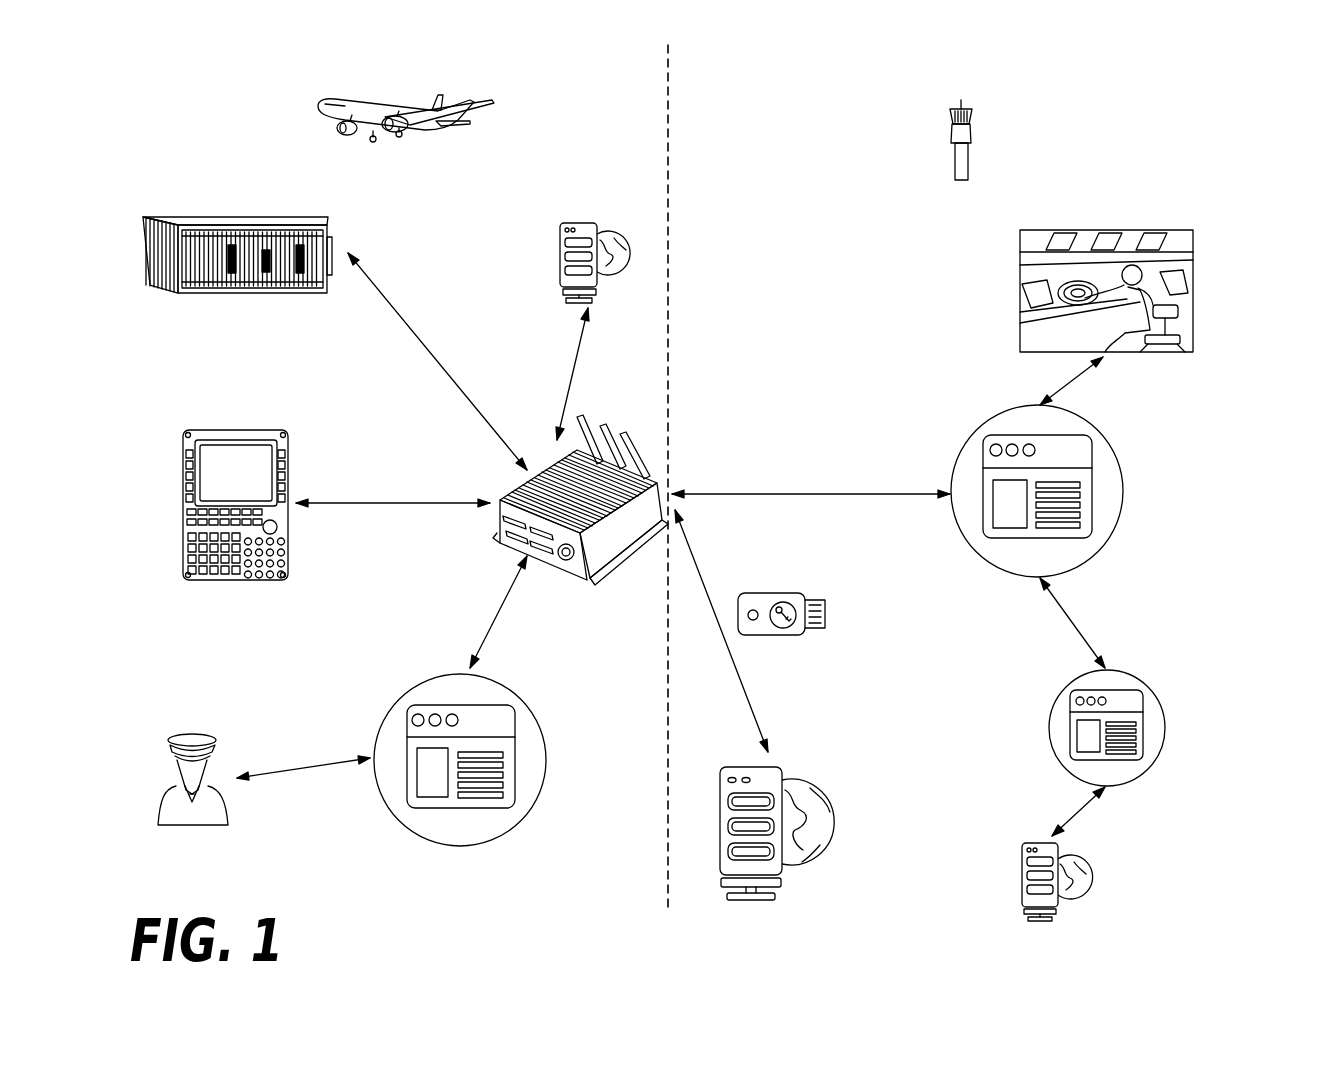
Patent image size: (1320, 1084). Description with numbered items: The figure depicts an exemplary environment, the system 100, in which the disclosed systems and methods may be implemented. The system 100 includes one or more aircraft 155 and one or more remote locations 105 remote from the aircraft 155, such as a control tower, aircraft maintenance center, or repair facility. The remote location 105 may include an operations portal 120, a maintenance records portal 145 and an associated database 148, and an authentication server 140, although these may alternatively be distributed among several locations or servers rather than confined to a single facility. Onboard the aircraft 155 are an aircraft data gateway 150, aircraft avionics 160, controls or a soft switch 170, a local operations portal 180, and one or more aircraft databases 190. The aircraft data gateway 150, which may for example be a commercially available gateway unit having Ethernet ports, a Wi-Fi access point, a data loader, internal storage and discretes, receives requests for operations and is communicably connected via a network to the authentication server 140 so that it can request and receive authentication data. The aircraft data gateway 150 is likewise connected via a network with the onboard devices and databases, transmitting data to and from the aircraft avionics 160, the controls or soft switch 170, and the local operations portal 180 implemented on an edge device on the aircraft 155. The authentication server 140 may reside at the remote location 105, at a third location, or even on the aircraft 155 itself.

The system 100 is at (1220, 175).
The remote location 105 is at (972, 128).
The operations portal 120 is at (1106, 433).
The authentication server 140 is at (820, 785).
The maintenance records portal 145 is at (1160, 705).
The database 148 is at (1085, 863).
The aircraft data gateway 150 is at (603, 582).
The aircraft 155 is at (472, 99).
The aircraft avionics 160 is at (163, 215).
The controls or soft switch 170 is at (210, 430).
The local operations portal 180 is at (503, 832).
The aircraft databases 190 is at (593, 222).